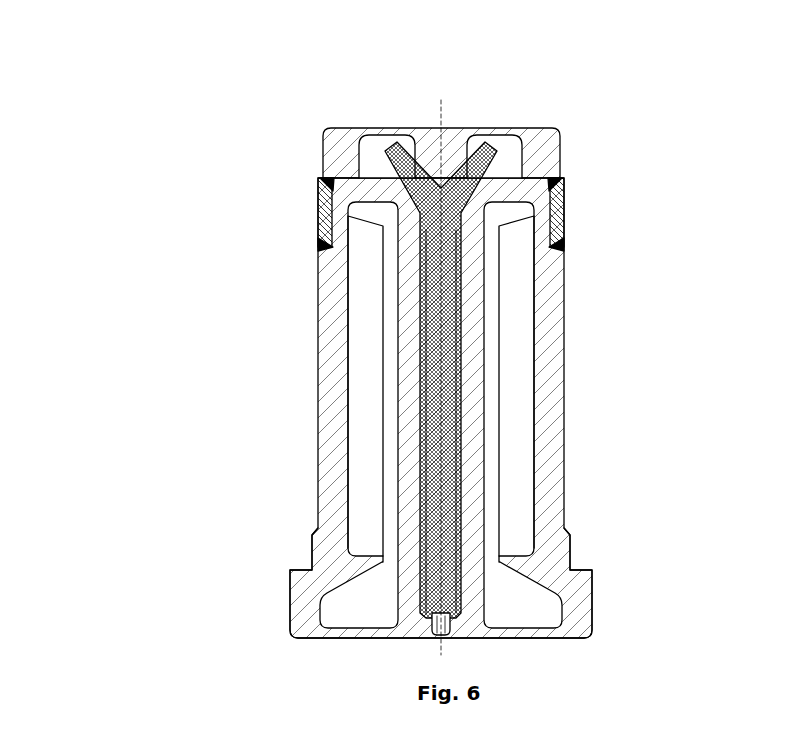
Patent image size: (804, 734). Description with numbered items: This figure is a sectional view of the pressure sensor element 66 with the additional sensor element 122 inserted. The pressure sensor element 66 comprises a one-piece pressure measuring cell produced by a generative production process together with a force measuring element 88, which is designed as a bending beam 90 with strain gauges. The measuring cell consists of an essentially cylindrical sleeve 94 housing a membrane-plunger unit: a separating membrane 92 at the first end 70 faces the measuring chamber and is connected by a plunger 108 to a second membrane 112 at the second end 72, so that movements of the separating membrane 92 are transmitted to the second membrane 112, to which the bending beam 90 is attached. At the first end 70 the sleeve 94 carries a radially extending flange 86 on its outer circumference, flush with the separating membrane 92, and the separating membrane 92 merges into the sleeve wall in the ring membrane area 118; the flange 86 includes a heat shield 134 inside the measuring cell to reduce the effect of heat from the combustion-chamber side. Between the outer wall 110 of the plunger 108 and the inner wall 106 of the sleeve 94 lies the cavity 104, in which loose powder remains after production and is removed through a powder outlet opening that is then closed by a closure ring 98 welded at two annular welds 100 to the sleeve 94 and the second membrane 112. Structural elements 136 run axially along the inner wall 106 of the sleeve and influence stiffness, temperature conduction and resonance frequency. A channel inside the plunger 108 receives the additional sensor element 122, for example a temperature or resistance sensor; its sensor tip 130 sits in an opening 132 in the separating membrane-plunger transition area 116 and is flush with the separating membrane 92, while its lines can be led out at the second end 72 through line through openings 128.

The pressure sensor element 66 is at (394, 353).
The first end 70 is at (407, 583).
The second end 72 is at (478, 102).
The flange 86 is at (580, 588).
The force measuring element 88 is at (537, 153).
The bending beam 90 is at (452, 135).
The separating membrane 92 is at (370, 626).
The sleeve 94 is at (548, 347).
The closure ring 98 is at (323, 195).
The annular welds 100 is at (566, 247).
The cavity 104 is at (515, 312).
The inner wall of the sleeve 106 is at (525, 415).
The plunger 108 is at (300, 433).
The outer wall of the plunger 110 is at (585, 443).
The second membrane 112 is at (431, 315).
The separating membrane-plunger transition area 116 is at (410, 612).
The ring membrane area 118 is at (580, 613).
The sensor element 122 is at (430, 330).
The line through openings 128 is at (452, 178).
The sensor tip 130 is at (416, 653).
The opening 132 is at (452, 628).
The heat shield 134 is at (537, 596).
The structural elements 136 is at (368, 402).